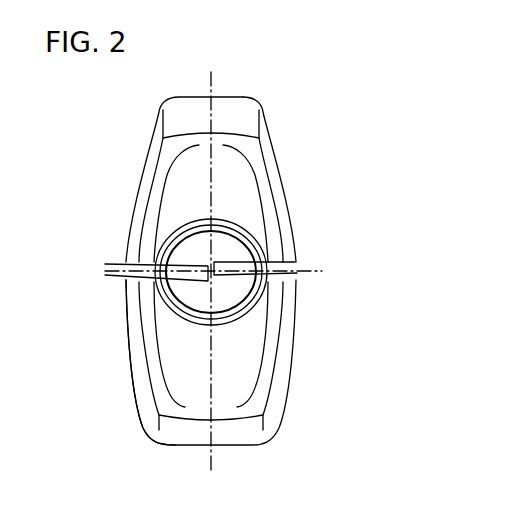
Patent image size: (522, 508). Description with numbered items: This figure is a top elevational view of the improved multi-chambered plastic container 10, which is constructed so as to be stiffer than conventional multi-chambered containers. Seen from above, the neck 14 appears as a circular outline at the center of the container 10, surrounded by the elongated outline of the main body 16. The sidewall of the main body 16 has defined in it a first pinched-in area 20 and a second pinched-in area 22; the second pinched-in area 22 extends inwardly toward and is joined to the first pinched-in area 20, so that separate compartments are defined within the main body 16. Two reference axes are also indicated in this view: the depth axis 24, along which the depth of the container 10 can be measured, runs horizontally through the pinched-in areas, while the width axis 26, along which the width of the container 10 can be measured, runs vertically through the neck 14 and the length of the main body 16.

The plastic container 10 is at (307, 397).
The neck 14 is at (249, 243).
The main body 16 is at (119, 415).
The first pinched-in area 20 is at (306, 259).
The second pinched-in area 22 is at (113, 262).
The depth axis 24 is at (303, 273).
The width axis 26 is at (213, 83).